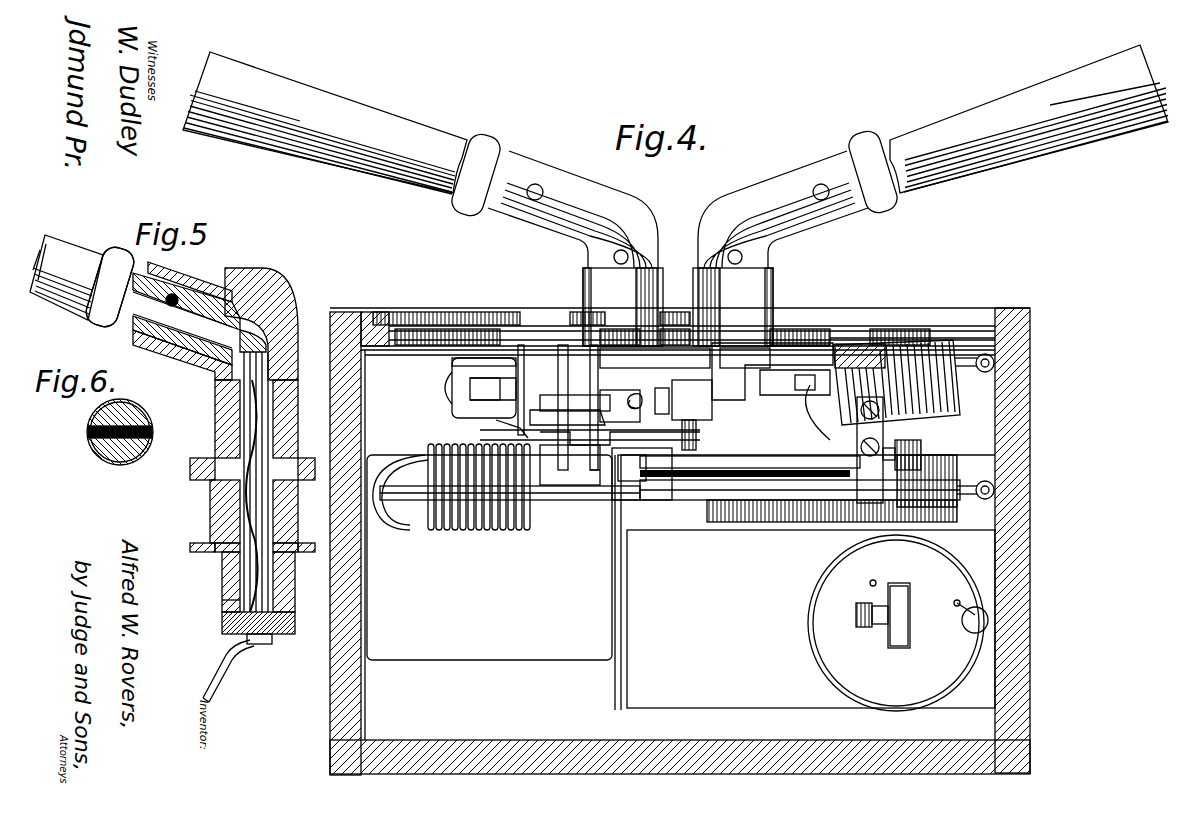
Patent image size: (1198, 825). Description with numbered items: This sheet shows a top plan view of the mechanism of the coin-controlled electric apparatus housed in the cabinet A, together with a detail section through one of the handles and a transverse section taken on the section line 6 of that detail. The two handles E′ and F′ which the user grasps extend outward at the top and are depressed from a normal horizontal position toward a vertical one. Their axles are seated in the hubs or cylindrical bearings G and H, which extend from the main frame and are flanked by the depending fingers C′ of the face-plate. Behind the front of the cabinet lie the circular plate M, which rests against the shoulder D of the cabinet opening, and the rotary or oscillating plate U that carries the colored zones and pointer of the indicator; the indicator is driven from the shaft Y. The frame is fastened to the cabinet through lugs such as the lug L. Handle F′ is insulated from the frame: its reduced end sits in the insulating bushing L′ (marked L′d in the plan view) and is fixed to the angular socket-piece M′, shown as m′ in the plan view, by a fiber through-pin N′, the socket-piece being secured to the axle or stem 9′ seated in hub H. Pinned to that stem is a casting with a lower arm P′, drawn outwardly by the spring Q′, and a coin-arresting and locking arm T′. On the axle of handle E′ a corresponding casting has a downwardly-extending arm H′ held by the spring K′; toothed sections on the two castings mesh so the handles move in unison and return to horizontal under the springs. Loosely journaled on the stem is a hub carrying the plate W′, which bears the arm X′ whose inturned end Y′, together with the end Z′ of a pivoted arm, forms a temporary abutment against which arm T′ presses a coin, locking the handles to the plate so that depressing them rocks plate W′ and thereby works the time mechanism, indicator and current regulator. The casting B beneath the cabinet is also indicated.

In FIG. 4, the cabinet A is at (1060, 353).
In FIG. 4, the handle F′ is at (347, 117).
In FIG. 5, the handle F′ is at (60, 238).
In FIG. 4, the handle E′ is at (987, 108).
In FIG. 4, the angular socket-piece m′ is at (551, 173).
In FIG. 4, the fiber through-pin N′ is at (533, 197).
In FIG. 5, the fiber through-pin N′ is at (148, 318).
In FIG. 6, the fiber through-pin N′ is at (87, 432).
In FIG. 4, the hub or cylindrical bearing G is at (772, 280).
In FIG. 4, the hub or cylindrical bearing H is at (583, 276).
In FIG. 5, the hub or cylindrical bearing H is at (215, 447).
In FIG. 4, the arm X′ is at (487, 367).
In FIG. 4, the lug L is at (540, 345).
In FIG. 5, the lug L is at (195, 478).
In FIG. 4, the shaft Y is at (645, 338).
In FIG. 4, the coin-arresting and locking arm T′ is at (688, 345).
In FIG. 4, the rotary or oscillating plate U is at (826, 330).
In FIG. 4, the circular plate M is at (928, 322).
In FIG. 6, the circular plate M is at (95, 450).
In FIG. 4, the shoulder D is at (398, 335).
In FIG. 4, the inturned end Y′ is at (455, 368).
In FIG. 4, the inturned end Z′ is at (468, 390).
In FIG. 4, the insulating bushing L′ is at (590, 397).
In FIG. 5, the insulating bushing L′ is at (220, 288).
In FIG. 6, the insulating bushing L′ is at (138, 420).
In FIG. 4, the lower arm P′ is at (692, 410).
In FIG. 4, the downwardly-extending arm H′ is at (772, 372).
In FIG. 4, the casting B is at (615, 394).
In FIG. 4, the depending fingers C′ is at (400, 492).
In FIG. 4, the spring Q′ is at (473, 525).
In FIG. 4, the plate W′ is at (560, 442).
In FIG. 5, the plate W′ is at (205, 560).
In FIG. 4, the spring K′ is at (928, 418).
In FIG. 4, the insulating bushing L′d is at (968, 633).
In FIG. 5, the angular socket-piece M′ is at (258, 298).
In FIG. 5, the section line 6 is at (172, 290).
In FIG. 5, the axle or stem 9′ is at (286, 400).